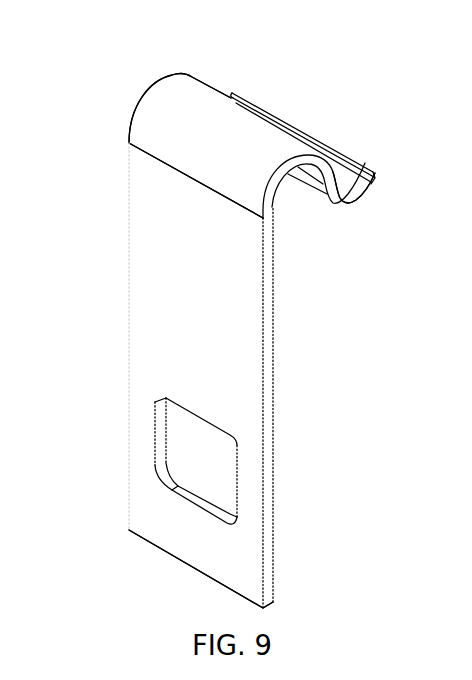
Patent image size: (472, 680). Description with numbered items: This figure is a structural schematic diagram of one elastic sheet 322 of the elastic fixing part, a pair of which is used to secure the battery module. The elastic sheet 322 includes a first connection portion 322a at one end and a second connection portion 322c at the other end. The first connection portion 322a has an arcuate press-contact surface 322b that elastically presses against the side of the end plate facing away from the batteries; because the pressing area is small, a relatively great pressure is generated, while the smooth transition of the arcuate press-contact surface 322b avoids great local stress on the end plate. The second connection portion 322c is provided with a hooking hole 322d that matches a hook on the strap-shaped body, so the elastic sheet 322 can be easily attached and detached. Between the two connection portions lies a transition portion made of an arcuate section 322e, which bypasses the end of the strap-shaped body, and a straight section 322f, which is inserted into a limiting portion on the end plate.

The elastic sheet 322 is at (273, 87).
The first connection portion 322a is at (352, 172).
The arcuate press-contact surface 322b is at (336, 204).
The second connection portion 322c is at (250, 543).
The hooking hole 322d is at (218, 460).
The arcuate section 322e is at (182, 121).
The straight section 322f is at (142, 252).